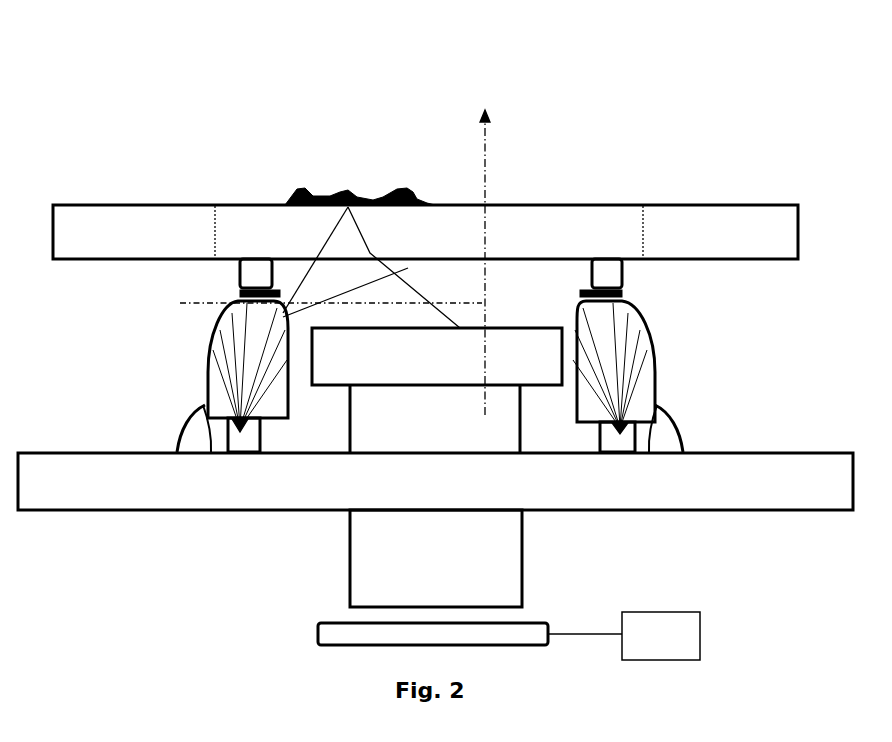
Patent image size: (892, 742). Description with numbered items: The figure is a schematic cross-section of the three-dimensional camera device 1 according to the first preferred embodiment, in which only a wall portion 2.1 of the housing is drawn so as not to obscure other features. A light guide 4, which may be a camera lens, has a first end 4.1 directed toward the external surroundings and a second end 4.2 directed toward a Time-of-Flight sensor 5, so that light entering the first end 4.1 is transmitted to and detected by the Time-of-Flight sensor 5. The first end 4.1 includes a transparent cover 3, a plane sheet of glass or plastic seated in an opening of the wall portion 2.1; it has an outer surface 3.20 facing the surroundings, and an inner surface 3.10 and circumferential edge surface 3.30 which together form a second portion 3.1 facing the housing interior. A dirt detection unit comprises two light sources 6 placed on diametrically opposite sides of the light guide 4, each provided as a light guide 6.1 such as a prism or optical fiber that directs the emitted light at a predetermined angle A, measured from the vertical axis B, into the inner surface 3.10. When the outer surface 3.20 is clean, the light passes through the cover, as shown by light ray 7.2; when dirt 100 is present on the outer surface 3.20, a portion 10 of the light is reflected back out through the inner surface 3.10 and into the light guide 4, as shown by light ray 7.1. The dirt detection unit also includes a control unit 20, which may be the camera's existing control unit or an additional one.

The 3D-camera device 1 is at (123, 93).
The wall portion 2.1 is at (150, 230).
The dirt 100 is at (310, 190).
The light ray 7.1 is at (308, 297).
The light ray 7.2 is at (408, 268).
The portion of the light 10 is at (421, 297).
The predetermined angle A is at (292, 290).
The vertical axis B is at (498, 253).
The transparent cover 3 is at (612, 234).
The outer surface 3.20 is at (613, 205).
The second portion 3.1 is at (777, 282).
The circumferential edge surface 3.30 is at (645, 232).
The inner surface 3.10 is at (577, 262).
The light source 6 is at (200, 407).
The light guide 6.1 is at (208, 357).
The light guide 4 is at (544, 545).
The first end 4.1 is at (338, 357).
The second end 4.2 is at (392, 587).
The Time-of-Flight sensor 5 is at (325, 625).
The control unit 20 is at (624, 636).